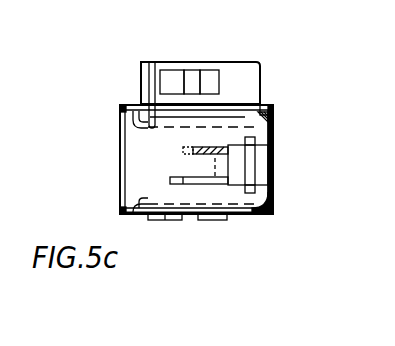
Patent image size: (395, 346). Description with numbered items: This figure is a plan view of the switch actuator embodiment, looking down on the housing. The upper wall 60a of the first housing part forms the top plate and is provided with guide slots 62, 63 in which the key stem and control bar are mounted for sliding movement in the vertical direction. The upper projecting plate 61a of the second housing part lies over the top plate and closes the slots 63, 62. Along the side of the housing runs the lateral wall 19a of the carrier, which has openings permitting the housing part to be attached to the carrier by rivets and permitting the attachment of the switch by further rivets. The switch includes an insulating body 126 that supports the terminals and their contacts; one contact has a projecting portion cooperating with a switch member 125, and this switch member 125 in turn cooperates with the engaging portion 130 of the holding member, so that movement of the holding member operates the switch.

The engaging portion 130 is at (150, 71).
The switch member 125 is at (173, 80).
The insulating body 126 is at (232, 73).
The lateral wall 19a is at (265, 106).
The upper wall 60a is at (140, 165).
The guide slot 62 is at (213, 172).
The upper projecting plate 61a is at (240, 163).
The guide slot 63 is at (207, 180).